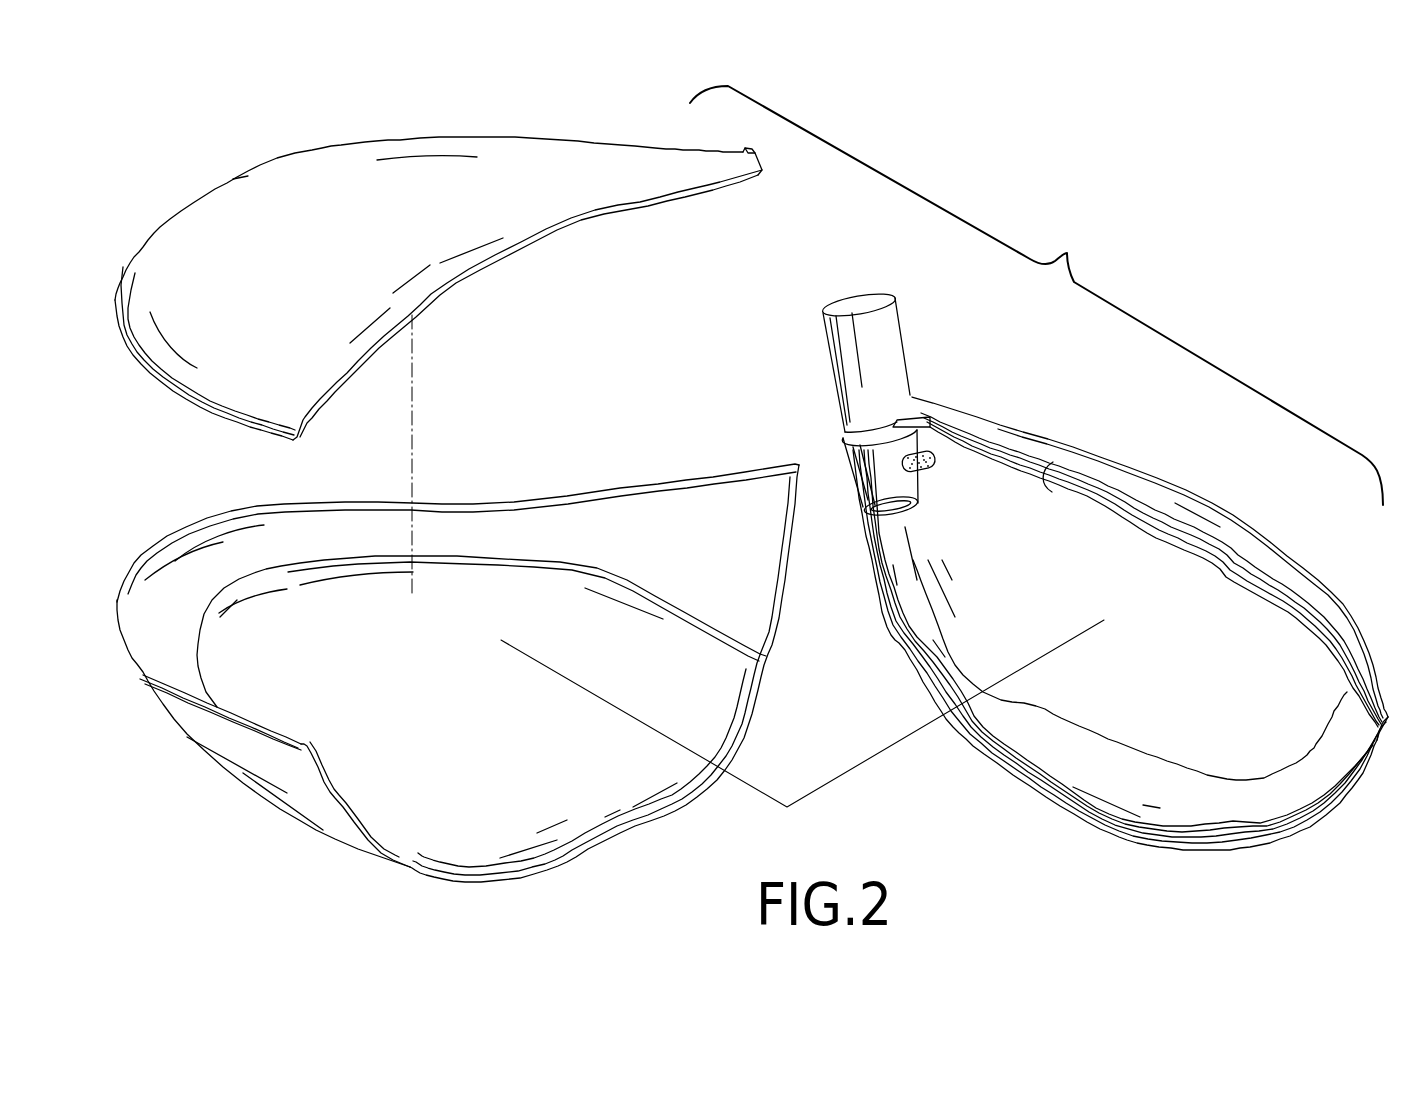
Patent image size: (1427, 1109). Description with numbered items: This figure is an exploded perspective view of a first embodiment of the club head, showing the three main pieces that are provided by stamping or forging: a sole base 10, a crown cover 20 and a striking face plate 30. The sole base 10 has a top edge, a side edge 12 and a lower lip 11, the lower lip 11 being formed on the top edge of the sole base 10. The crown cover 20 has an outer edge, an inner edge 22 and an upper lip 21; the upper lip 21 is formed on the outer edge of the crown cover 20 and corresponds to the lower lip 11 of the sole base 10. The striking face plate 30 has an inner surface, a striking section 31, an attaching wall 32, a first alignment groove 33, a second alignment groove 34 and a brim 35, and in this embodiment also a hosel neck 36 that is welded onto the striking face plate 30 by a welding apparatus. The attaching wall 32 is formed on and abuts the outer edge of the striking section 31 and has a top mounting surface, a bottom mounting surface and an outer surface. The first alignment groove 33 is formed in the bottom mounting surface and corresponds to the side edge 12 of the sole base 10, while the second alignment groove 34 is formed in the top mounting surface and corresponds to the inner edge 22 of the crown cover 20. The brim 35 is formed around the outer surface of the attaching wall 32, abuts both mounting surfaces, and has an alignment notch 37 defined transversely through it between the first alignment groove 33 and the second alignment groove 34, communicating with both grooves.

The sole base 10 is at (454, 702).
The lower lip 11 is at (186, 533).
The side edge 12 is at (556, 867).
The crown cover 20 is at (424, 270).
The upper lip 21 is at (158, 377).
The inner edge 22 is at (323, 397).
The striking face plate 30 is at (1129, 652).
The striking section 31 is at (1236, 747).
The attaching wall 32 is at (1259, 546).
The first alignment groove 33 is at (1042, 785).
The second alignment groove 34 is at (1050, 467).
The brim 35 is at (991, 756).
The hosel neck 36 is at (867, 338).
The alignment notch 37 is at (1377, 740).